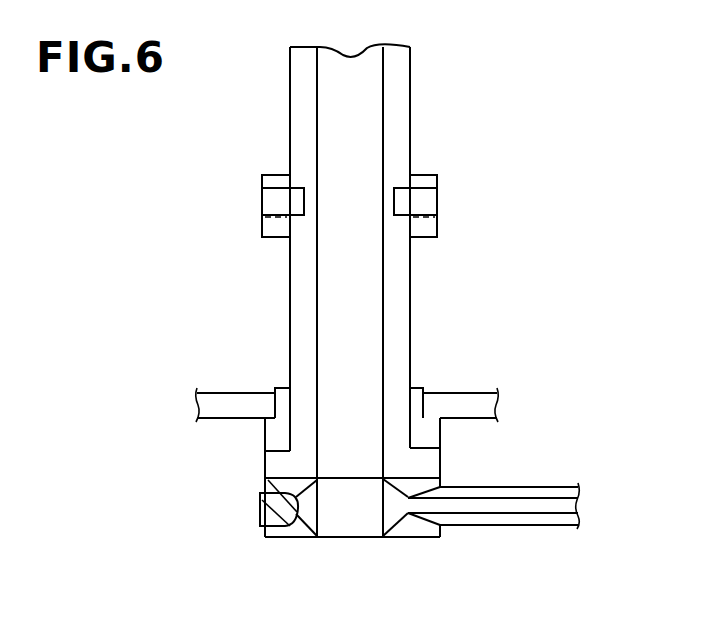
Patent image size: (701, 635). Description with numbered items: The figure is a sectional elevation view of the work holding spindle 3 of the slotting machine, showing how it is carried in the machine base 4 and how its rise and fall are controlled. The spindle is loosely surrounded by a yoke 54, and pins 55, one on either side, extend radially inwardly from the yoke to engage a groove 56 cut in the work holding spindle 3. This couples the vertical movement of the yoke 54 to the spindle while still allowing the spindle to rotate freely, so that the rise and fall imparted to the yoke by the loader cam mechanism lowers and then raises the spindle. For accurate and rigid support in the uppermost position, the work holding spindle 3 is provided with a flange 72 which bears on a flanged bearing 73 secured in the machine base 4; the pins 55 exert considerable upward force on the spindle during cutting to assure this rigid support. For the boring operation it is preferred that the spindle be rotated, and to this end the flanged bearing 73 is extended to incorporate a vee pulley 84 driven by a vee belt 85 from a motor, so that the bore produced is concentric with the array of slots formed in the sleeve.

The work holding spindle 3 is at (400, 329).
The machine base 4 is at (229, 398).
The yoke 54 is at (272, 236).
The pins 55 is at (263, 198).
The groove 56 is at (300, 212).
The flange 72 is at (272, 466).
The flanged bearing 73 is at (273, 437).
The vee pulley 84 is at (303, 530).
The vee belt 85 is at (510, 505).